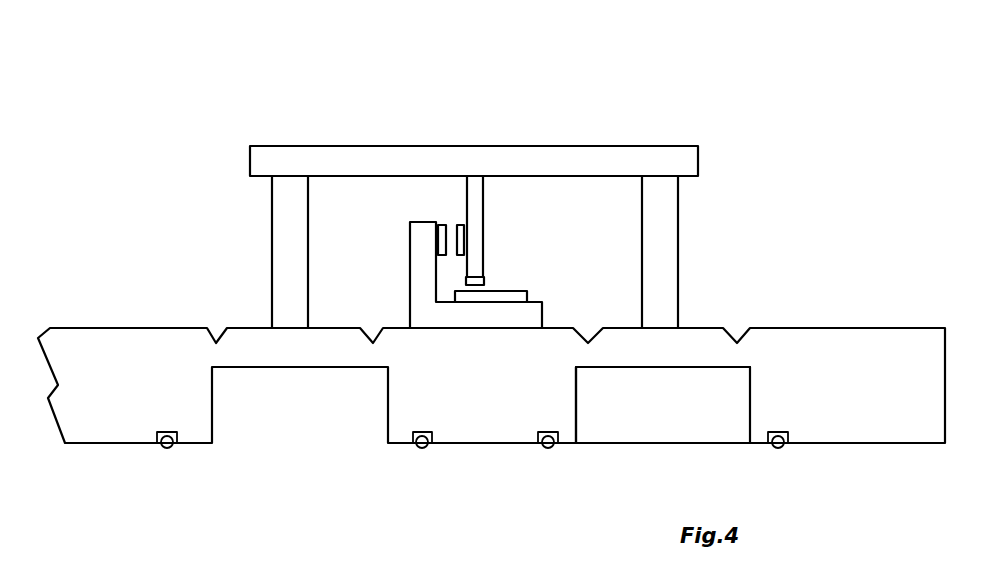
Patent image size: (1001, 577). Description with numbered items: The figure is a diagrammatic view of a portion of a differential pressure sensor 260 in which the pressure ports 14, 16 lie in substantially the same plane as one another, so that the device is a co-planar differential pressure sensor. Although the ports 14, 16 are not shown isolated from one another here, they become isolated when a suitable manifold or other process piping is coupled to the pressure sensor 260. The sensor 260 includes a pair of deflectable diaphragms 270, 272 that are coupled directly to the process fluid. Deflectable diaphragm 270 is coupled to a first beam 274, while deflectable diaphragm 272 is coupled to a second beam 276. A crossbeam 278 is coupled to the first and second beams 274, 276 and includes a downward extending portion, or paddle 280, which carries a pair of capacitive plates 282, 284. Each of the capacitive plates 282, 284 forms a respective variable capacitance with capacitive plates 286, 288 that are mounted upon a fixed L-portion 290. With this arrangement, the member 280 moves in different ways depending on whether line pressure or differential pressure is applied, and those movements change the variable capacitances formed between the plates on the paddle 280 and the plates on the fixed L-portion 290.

The differential pressure sensor 260 is at (735, 118).
The deflectable diaphragm 270 is at (330, 368).
The deflectable diaphragm 272 is at (710, 369).
The first beam 274 is at (272, 266).
The second beam 276 is at (678, 268).
The crossbeam 278 is at (562, 146).
The paddle 280 is at (485, 212).
The capacitive plate 282 is at (458, 225).
The capacitive plate 284 is at (488, 278).
The capacitive plate 286 is at (440, 225).
The capacitive plate 288 is at (528, 296).
The fixed L-portion 290 is at (410, 283).
The pressure port 14 is at (290, 366).
The pressure port 16 is at (660, 366).